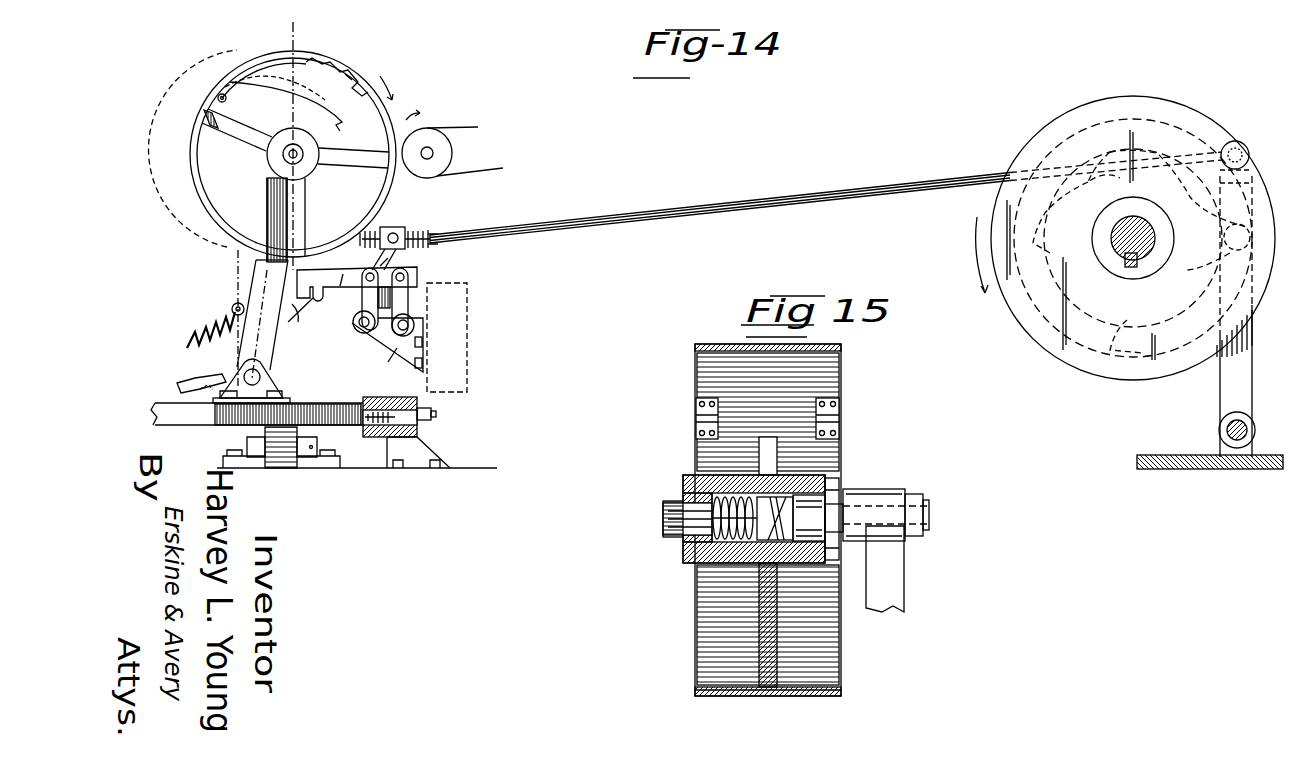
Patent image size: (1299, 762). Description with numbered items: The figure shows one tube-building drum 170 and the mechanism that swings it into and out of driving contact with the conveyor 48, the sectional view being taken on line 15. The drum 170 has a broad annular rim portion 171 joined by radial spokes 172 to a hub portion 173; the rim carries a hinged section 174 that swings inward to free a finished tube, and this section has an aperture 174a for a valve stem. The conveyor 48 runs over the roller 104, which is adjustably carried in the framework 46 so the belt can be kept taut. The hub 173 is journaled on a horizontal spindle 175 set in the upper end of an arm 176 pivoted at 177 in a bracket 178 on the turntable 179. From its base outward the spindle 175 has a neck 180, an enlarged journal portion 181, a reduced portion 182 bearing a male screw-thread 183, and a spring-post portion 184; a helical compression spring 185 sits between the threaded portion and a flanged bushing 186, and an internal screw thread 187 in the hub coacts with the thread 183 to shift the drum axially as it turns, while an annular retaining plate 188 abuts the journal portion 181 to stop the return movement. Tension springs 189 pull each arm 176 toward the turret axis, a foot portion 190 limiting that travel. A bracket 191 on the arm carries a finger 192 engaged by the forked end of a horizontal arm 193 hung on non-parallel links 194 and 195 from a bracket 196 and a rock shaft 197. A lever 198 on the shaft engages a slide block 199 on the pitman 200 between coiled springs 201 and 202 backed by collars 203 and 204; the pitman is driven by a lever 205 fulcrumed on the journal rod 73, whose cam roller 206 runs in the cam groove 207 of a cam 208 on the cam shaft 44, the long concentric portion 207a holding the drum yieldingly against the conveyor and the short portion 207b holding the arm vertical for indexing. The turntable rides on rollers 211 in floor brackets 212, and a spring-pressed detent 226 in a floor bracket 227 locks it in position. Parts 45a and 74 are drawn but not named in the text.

In FIG. 14, the section line 15 is at (279, 31).
In FIG. 14, the cam shaft 44 is at (1125, 262).
In FIG. 14, the base 45a is at (1213, 470).
In FIG. 14, the framework 46 is at (468, 368).
In FIG. 14, the conveyor 48 is at (458, 127).
In FIG. 14, the journal rod 73 is at (1219, 430).
In FIG. 14, the pivot bearing 74 is at (1222, 445).
In FIG. 14, the roller 104 is at (452, 154).
In FIG. 15, the drum 170 is at (705, 443).
In FIG. 14, the annular rim portion 171 is at (200, 168).
In FIG. 15, the annular rim portion 171 is at (725, 698).
In FIG. 14, the radial spokes 172 is at (241, 127).
In FIG. 15, the radial spokes 172 is at (776, 648).
In FIG. 14, the hub portion 173 is at (310, 165).
In FIG. 15, the hub portion 173 is at (700, 563).
In FIG. 14, the hinged section 174 is at (248, 60).
In FIG. 15, the hinged section 174 is at (830, 350).
In FIG. 14, the aperture 174a is at (326, 62).
In FIG. 14, the horizontal spindle 175 is at (289, 148).
In FIG. 15, the horizontal spindle 175 is at (930, 512).
In FIG. 14, the arm 176 is at (255, 282).
In FIG. 15, the arm 176 is at (900, 592).
In FIG. 14, the pivot 177 is at (268, 372).
In FIG. 14, the bracket 178 is at (277, 386).
In FIG. 14, the turret or turntable 179 is at (251, 396).
In FIG. 15, the neck 180 is at (843, 548).
In FIG. 15, the enlarged journal portion 181 is at (803, 550).
In FIG. 15, the reduced portion 182 is at (752, 563).
In FIG. 15, the male screw-thread 183 is at (757, 553).
In FIG. 15, the centering and spring-post portion 184 is at (672, 516).
In FIG. 15, the helical compression spring 185 is at (692, 542).
In FIG. 15, the flanged bushing 186 is at (664, 501).
In FIG. 15, the internal screw thread 187 is at (763, 595).
In FIG. 15, the annular retaining plate 188 is at (838, 480).
In FIG. 14, the tension spring 189 is at (208, 323).
In FIG. 14, the foot portion 190 is at (185, 380).
In FIG. 14, the bracket 191 is at (307, 326).
In FIG. 14, the finger 192 is at (316, 300).
In FIG. 14, the horizontal arm 193 is at (357, 290).
In FIG. 14, the link 194 is at (410, 305).
In FIG. 14, the link 195 is at (402, 287).
In FIG. 14, the bracket 196 is at (384, 354).
In FIG. 14, the rock shaft 197 is at (362, 333).
In FIG. 14, the lever 198 is at (398, 257).
In FIG. 14, the slide block 199 is at (397, 227).
In FIG. 14, the pitman 200 is at (578, 218).
In FIG. 14, the coiled spring 201 is at (418, 232).
In FIG. 14, the coiled spring 202 is at (372, 231).
In FIG. 14, the collar 203 is at (440, 245).
In FIG. 14, the collar 204 is at (288, 230).
In FIG. 14, the lever 205 is at (1222, 370).
In FIG. 14, the cam roller 206 is at (1211, 248).
In FIG. 14, the cam groove 207 is at (1126, 330).
In FIG. 14, the concentric portion 207a is at (1060, 217).
In FIG. 14, the concentric portion 207b is at (1167, 188).
In FIG. 14, the cam 208 is at (1015, 335).
In FIG. 14, the roller 211 is at (286, 468).
In FIG. 14, the bracket 212 is at (300, 468).
In FIG. 14, the spring-pressed detent 226 is at (368, 437).
In FIG. 14, the floor bracket 227 is at (425, 449).